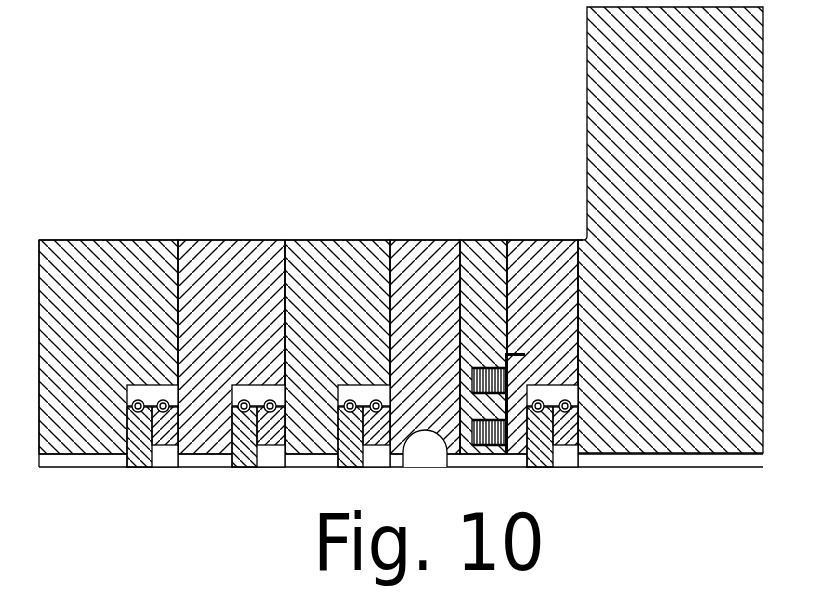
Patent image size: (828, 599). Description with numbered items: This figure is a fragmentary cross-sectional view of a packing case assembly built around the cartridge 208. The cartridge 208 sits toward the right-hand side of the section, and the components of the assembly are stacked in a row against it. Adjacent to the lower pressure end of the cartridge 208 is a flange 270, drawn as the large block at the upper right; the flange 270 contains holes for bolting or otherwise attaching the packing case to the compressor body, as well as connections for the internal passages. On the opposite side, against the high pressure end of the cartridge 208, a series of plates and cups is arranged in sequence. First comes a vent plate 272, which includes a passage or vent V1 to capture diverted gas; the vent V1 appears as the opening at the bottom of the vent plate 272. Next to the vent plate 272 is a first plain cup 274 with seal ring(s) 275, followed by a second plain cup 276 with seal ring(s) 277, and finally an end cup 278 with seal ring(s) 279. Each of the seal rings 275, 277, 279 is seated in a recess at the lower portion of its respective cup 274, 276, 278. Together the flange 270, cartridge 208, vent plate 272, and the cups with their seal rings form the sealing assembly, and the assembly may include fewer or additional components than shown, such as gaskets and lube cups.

The flange 270 is at (603, 98).
The end cup 278 is at (108, 264).
The second plain cup 276 is at (235, 264).
The first plain cup 274 is at (342, 264).
The vent plate 272 is at (423, 264).
The cartridge 208 is at (522, 212).
The seal ring 279 is at (132, 453).
The seal ring 277 is at (257, 453).
The seal ring 275 is at (362, 453).
The vent V1 is at (418, 455).